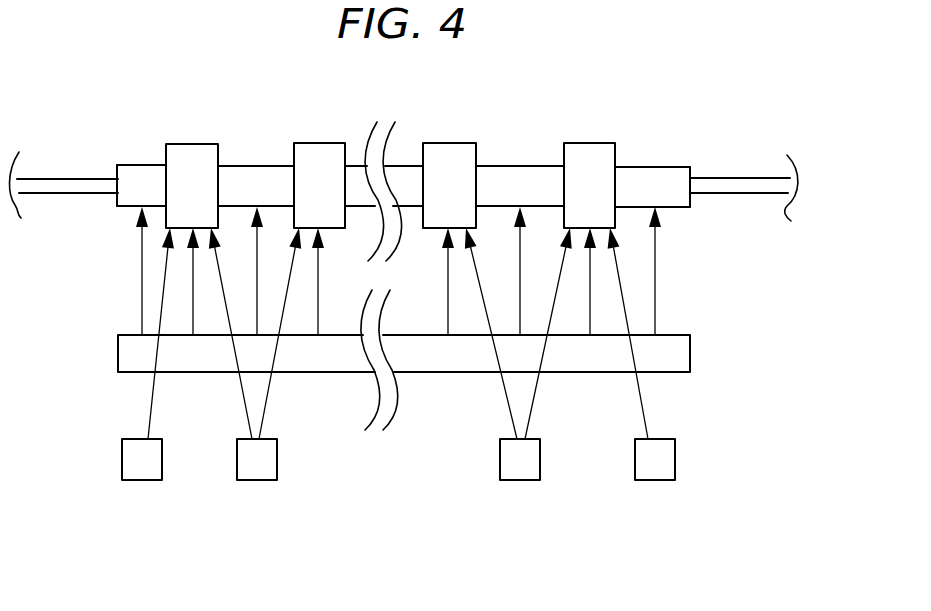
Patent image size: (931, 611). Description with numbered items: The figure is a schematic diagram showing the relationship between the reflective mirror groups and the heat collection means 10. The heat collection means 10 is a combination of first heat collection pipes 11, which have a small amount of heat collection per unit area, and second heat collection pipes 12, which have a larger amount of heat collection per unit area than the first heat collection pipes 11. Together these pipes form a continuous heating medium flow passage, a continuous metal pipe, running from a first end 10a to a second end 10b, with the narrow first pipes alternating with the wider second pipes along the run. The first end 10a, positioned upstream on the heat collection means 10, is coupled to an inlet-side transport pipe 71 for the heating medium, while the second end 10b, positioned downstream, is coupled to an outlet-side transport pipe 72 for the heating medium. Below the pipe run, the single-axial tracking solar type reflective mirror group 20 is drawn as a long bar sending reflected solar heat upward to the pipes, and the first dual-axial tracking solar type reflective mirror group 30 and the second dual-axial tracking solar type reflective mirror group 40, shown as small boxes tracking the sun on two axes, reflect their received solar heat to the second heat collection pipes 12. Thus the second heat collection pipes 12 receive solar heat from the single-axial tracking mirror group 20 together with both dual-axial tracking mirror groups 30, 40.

The heat collection means 10 is at (203, 72).
The first end 10a is at (118, 203).
The second end 10b is at (690, 176).
The first heat collection pipes 11 is at (147, 165).
The second heat collection pipes 12 is at (195, 144).
The single-axial tracking solar type reflective mirror group 20 is at (202, 374).
The first dual-axial tracking solar type reflective mirror group 30 is at (260, 481).
The second dual-axial tracking solar type reflective mirror group 40 is at (522, 481).
The inlet-side transport pipe 71 is at (67, 179).
The outlet-side transport pipe 72 is at (758, 178).